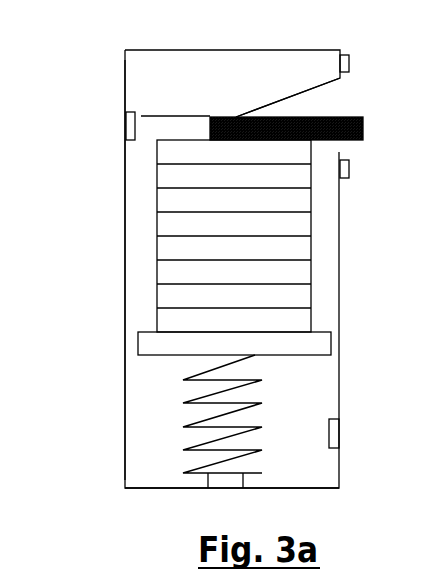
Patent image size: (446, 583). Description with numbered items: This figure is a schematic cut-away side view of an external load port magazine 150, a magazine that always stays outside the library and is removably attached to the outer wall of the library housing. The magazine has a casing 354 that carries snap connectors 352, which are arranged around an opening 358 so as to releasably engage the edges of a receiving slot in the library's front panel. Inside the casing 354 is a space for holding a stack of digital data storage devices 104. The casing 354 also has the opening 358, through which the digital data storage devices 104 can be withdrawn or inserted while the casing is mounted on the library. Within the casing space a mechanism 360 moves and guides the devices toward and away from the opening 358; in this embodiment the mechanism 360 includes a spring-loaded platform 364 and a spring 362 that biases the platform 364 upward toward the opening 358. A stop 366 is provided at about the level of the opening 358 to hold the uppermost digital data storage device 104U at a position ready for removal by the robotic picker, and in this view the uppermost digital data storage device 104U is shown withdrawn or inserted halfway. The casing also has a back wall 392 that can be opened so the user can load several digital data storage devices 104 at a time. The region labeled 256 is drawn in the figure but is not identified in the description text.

The external load port magazine 150 is at (118, 72).
The digital data storage device 104 is at (172, 177).
The uppermost digital data storage device 104U is at (363, 130).
The snap connectors 352 is at (350, 57).
The casing 354 is at (124, 206).
The opening 358 is at (341, 102).
The stop 366 is at (168, 115).
The interior space 256 is at (135, 300).
The spring-loaded platform 364 is at (143, 345).
The spring 362 is at (185, 427).
The mechanism 360 is at (62, 352).
The back wall 392 is at (120, 477).